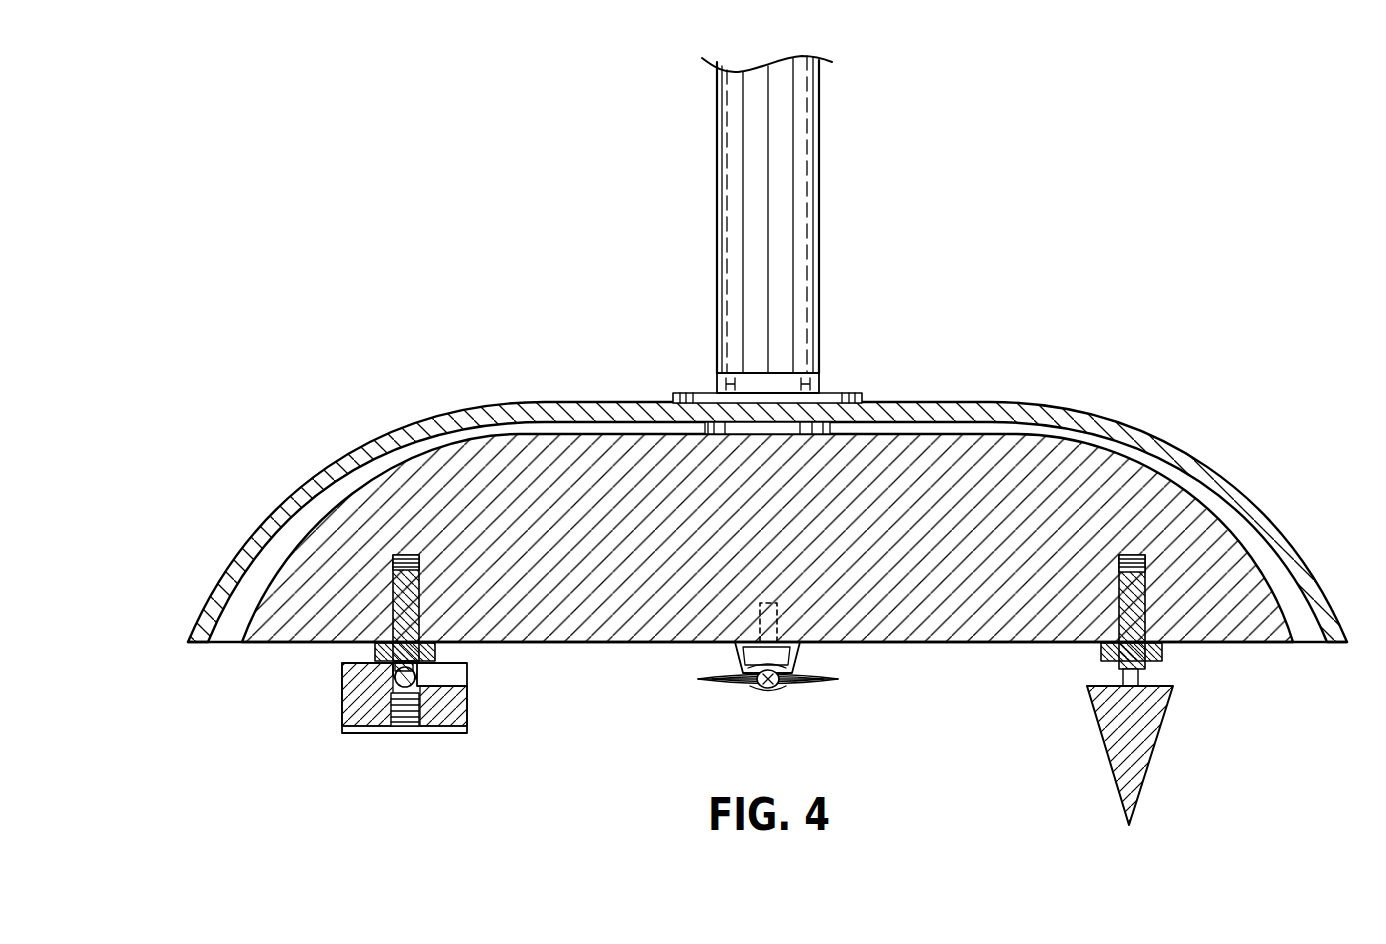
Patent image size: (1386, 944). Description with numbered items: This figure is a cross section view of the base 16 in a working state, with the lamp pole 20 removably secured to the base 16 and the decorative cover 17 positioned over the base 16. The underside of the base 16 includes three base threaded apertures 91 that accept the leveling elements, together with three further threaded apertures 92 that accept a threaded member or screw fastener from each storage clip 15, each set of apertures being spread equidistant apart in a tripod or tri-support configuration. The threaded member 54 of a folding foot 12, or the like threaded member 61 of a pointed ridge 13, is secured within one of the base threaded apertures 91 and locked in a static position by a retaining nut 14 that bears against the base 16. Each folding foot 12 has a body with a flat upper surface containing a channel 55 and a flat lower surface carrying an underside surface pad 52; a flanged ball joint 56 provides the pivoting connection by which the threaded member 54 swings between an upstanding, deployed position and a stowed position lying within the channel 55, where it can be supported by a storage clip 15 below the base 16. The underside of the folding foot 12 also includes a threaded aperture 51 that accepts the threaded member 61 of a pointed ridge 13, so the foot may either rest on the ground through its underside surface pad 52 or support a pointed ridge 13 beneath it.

The folding foot 12 is at (401, 712).
The pointed ridge 13 is at (804, 700).
The retaining nut 14 is at (1163, 653).
The storage clip 15 is at (742, 656).
The base 16 is at (508, 460).
The decorative cover 17 is at (426, 426).
The lamp pole 20 is at (819, 163).
The threaded aperture 51 is at (402, 732).
The underside surface pad 52 is at (362, 734).
The threaded member 54 is at (376, 648).
The channel 55 is at (458, 664).
The ball joint 56 is at (406, 677).
The threaded member 61 is at (1124, 681).
The base threaded apertures 91 is at (396, 556).
The threaded apertures 92 is at (778, 615).